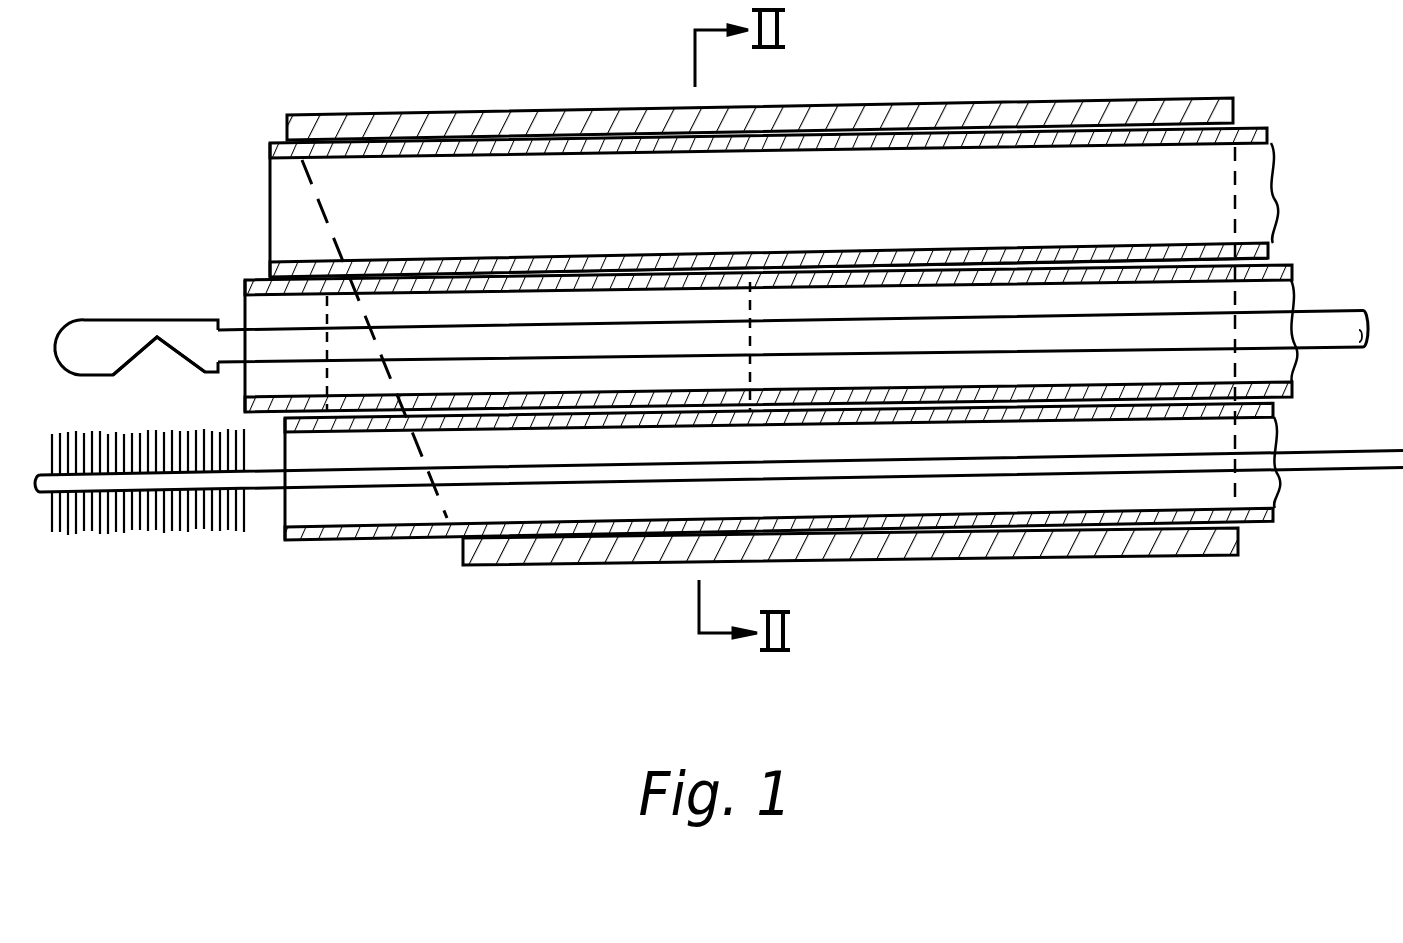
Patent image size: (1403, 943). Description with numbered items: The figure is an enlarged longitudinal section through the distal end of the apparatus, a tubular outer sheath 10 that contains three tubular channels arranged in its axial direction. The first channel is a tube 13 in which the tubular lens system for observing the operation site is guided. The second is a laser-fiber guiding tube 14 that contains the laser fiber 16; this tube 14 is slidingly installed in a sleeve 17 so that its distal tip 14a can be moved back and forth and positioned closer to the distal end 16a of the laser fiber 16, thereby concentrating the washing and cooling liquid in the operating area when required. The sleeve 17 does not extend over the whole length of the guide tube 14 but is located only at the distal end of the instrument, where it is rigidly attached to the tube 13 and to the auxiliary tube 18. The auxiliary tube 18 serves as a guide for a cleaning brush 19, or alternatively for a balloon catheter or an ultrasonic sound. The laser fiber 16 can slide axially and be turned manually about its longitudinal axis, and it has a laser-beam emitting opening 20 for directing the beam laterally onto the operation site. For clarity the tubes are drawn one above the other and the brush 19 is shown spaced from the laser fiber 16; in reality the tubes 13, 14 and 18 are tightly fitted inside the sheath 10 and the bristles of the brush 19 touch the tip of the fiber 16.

The tubular outer sheath 10 is at (590, 120).
The tube 13 is at (273, 145).
The laser-fiber guiding tube 14 is at (390, 262).
The distal tip of laser-fiber guiding tube 14a is at (243, 281).
The laser fiber 16 is at (1328, 315).
The distal end of laser fiber 16a is at (70, 320).
The sleeve 17 is at (447, 262).
The auxiliary tube 18 is at (392, 540).
The cleaning brush 19 is at (110, 532).
The laser-beam emitting opening 20 is at (157, 348).